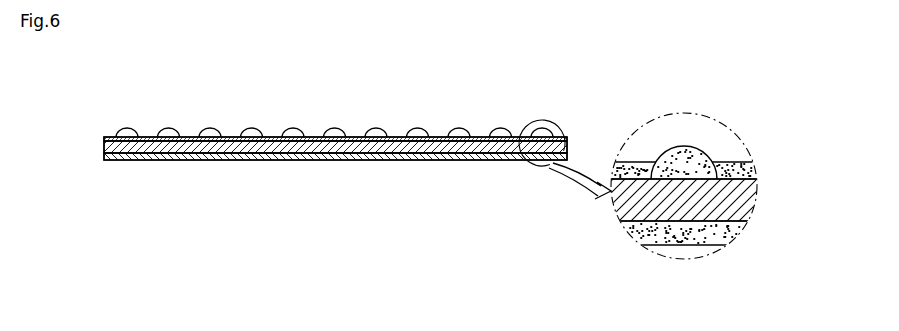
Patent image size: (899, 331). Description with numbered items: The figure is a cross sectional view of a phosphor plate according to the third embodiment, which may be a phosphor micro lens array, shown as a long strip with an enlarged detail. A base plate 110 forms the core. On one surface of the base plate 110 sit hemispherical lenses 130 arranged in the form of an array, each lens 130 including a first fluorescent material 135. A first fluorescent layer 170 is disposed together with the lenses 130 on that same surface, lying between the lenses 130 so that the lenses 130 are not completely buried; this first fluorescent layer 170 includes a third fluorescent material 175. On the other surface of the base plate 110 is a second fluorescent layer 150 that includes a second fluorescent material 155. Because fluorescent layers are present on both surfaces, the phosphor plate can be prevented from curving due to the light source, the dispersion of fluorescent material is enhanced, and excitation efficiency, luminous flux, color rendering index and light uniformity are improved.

The base plate 110 is at (104, 148).
The lens 130 is at (207, 132).
The first fluorescent material 135 is at (682, 157).
The second fluorescent layer 150 is at (127, 160).
The second fluorescent material 155 is at (727, 237).
The first fluorescent layer 170 is at (105, 135).
The third fluorescent material 175 is at (750, 168).